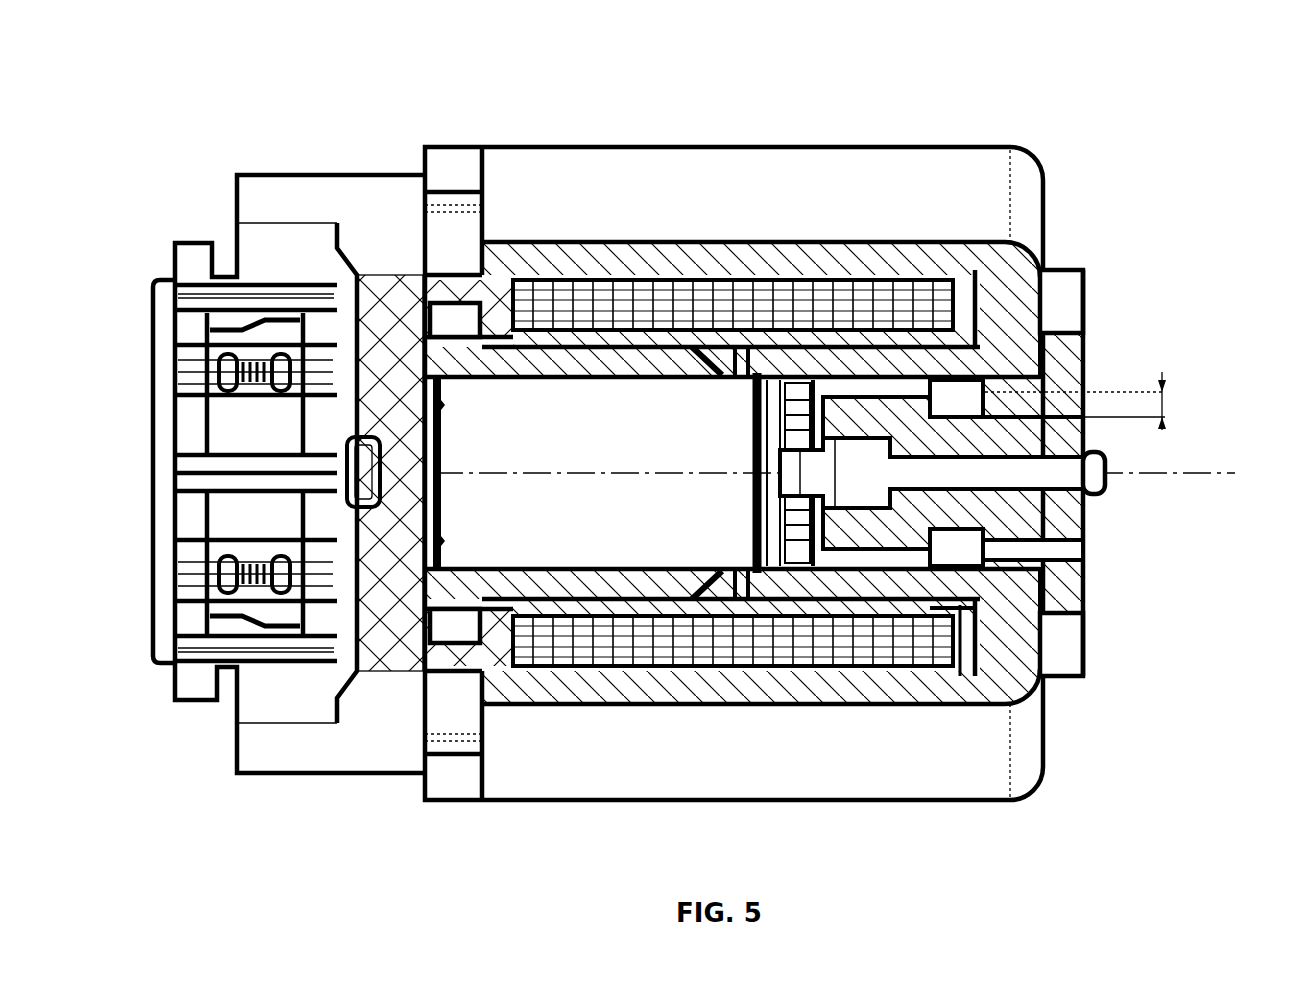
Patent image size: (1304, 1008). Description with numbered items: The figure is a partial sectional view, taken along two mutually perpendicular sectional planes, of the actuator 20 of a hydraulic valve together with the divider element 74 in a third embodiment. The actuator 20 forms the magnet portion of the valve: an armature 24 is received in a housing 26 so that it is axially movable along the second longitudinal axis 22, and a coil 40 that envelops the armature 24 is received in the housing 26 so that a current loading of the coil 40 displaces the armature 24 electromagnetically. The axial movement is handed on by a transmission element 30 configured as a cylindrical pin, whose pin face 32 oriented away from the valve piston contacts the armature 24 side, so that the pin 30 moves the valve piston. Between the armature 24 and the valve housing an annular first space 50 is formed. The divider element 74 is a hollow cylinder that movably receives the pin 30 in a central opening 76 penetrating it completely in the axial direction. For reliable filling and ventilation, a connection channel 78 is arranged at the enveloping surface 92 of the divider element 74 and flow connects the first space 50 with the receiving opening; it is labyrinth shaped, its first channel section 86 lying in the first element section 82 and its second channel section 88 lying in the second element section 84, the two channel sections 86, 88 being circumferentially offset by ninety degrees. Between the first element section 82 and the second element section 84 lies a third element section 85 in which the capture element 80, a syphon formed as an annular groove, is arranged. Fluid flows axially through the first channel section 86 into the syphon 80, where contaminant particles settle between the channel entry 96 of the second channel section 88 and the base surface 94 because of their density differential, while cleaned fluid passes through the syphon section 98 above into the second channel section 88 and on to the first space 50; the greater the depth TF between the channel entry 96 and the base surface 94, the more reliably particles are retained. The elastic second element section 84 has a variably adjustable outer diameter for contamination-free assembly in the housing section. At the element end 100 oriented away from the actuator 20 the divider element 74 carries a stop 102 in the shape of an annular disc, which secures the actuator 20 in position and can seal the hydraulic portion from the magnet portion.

The actuator 20 is at (990, 116).
The second longitudinal axis 22 is at (1240, 468).
The armature 24 is at (561, 456).
The housing 26 is at (565, 185).
The transmission element 30 is at (1108, 456).
The pin face 32 is at (750, 497).
The coil 40 is at (640, 305).
The first space 50 is at (793, 565).
The divider element 74 is at (1086, 300).
The central opening 76 is at (1102, 490).
The connection channel 78 is at (803, 385).
The capture element 80 is at (1050, 270).
The first element section 82 is at (1056, 520).
The second element section 84 is at (850, 597).
The third element section 85 is at (868, 345).
The first channel section 86 is at (1067, 553).
The second channel section 88 is at (845, 385).
The enveloping surface 92 is at (880, 620).
The base surface 94 is at (937, 622).
The channel entry 96 is at (957, 380).
The syphon section 98 is at (975, 622).
The element end 100 is at (1087, 345).
The stop 102 is at (1060, 660).
The depth TF is at (1165, 405).